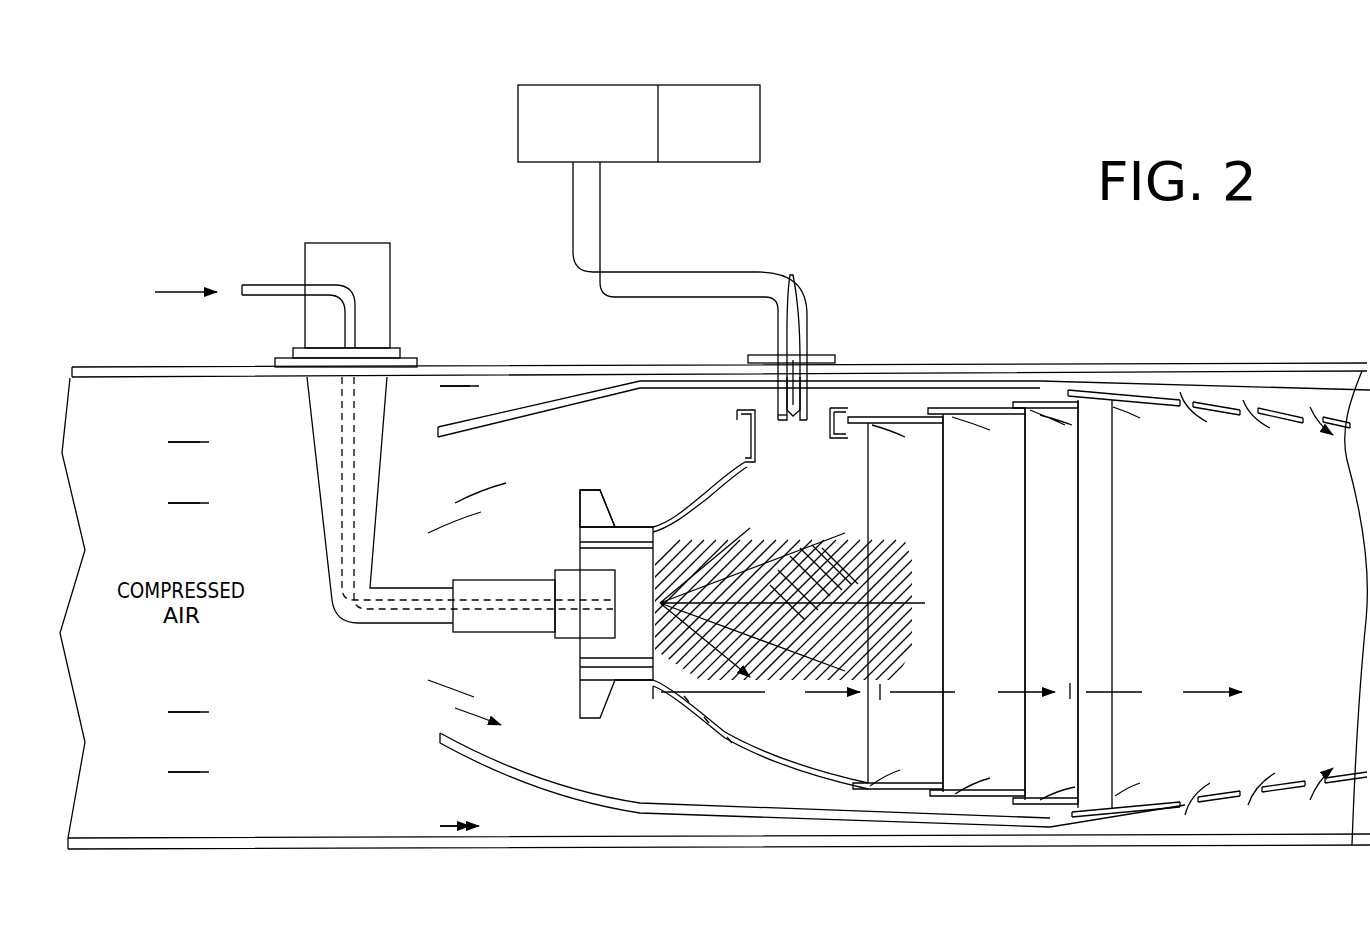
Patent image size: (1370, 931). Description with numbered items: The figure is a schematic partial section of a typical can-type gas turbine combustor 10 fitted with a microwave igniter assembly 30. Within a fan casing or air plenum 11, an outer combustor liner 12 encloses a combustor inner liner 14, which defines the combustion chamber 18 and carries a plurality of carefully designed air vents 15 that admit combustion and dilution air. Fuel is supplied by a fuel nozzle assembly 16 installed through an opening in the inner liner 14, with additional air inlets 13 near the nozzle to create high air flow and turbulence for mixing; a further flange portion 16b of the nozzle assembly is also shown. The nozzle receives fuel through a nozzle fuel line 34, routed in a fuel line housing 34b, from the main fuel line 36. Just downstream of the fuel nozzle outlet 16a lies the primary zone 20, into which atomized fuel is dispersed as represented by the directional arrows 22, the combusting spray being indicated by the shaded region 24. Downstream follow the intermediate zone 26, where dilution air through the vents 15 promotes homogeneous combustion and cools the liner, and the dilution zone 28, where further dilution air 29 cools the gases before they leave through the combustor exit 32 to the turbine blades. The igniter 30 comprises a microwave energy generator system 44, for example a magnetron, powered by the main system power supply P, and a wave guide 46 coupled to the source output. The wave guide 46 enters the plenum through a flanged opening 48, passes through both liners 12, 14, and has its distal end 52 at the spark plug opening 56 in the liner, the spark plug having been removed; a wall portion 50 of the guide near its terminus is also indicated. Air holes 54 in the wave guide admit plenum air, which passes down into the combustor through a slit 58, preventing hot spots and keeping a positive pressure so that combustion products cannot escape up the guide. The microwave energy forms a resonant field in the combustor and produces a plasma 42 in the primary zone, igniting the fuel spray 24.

The combustor 10 is at (440, 767).
The fan casing or air plenum 11 is at (137, 367).
The outer combustor liner 12 is at (530, 405).
The additional air inlets 13 is at (568, 555).
The combustor inner liner 14 is at (776, 760).
The air vents 15 is at (728, 742).
The fuel nozzle assembly 16 is at (330, 643).
The fuel nozzle outlet 16a is at (622, 586).
The flange lug 16b is at (608, 487).
The combustion chamber 18 is at (1072, 590).
The primary zone 20 is at (756, 695).
The directional arrows 22 is at (842, 533).
The shaded region 24 is at (853, 572).
The intermediate zone 26 is at (975, 694).
The dilution zone 28 is at (1164, 694).
The dilution air 29 is at (1185, 400).
The microwave igniter assembly 30 is at (852, 186).
The combustor exit 32 is at (1338, 642).
The nozzle fuel line 34 is at (350, 297).
The fuel line housing 34b is at (313, 482).
The main fuel line 36 is at (205, 297).
The plasma 42 is at (813, 603).
The microwave energy generator system 44 is at (580, 85).
The wave guide 46 is at (573, 220).
The flanged opening 48 is at (750, 338).
The waveguide outlet wall 50 is at (810, 398).
The distal end 52 is at (768, 418).
The air holes 54 is at (790, 297).
The spark plug opening 56 is at (773, 412).
The slit 58 is at (793, 408).
The main system power supply P is at (712, 85).